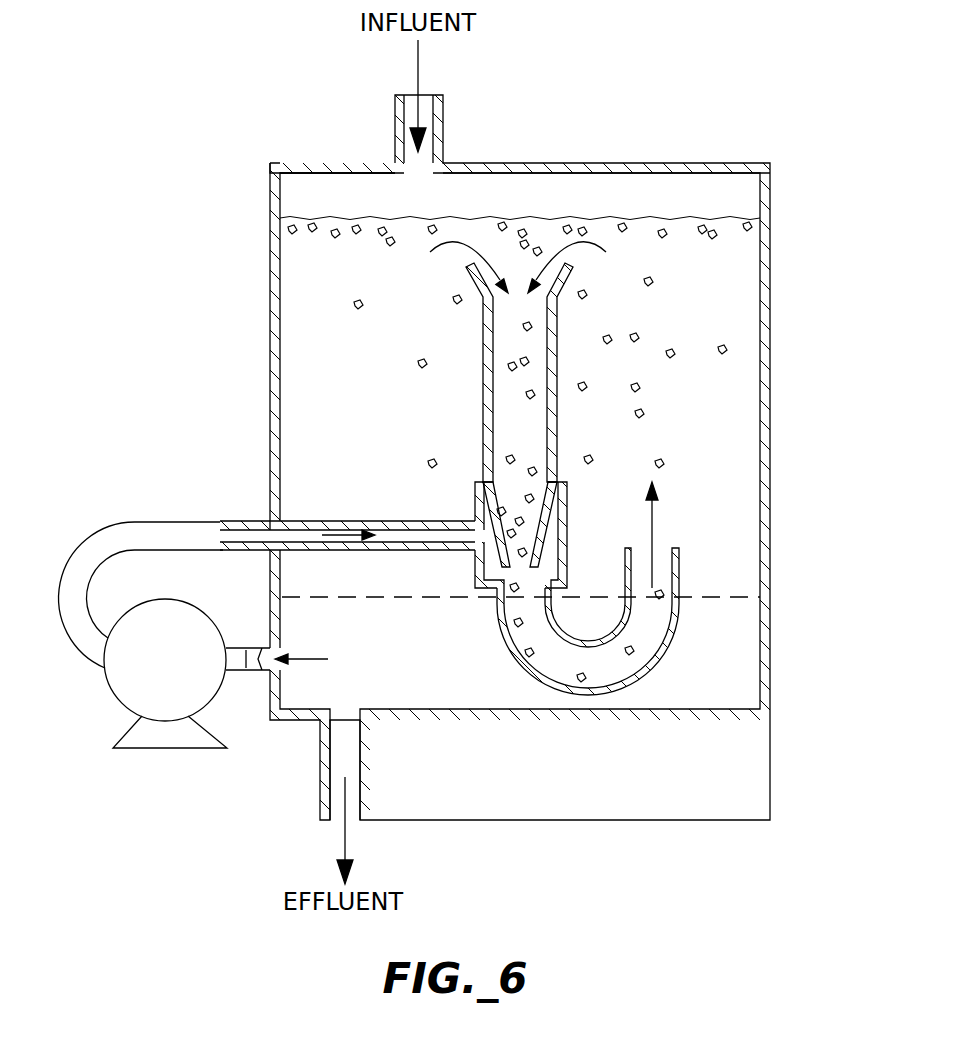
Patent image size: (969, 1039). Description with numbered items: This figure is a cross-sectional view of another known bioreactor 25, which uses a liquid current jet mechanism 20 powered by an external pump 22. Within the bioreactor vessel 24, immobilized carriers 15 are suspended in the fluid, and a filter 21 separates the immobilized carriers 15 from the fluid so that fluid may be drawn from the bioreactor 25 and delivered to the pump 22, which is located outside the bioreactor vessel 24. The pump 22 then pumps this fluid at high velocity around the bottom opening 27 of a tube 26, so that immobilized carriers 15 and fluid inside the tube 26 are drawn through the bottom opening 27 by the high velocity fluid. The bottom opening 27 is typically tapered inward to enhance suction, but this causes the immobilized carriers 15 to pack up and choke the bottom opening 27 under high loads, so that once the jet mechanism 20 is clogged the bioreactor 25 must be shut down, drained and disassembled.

The immobilized carriers 15 is at (350, 306).
The liquid current jet mechanism 20 is at (584, 492).
The filter 21 is at (727, 597).
The pump 22 is at (179, 672).
The bioreactor vessel 24 is at (770, 332).
The bioreactor 25 is at (723, 448).
The tube 26 is at (483, 393).
The bottom opening 27 is at (524, 573).